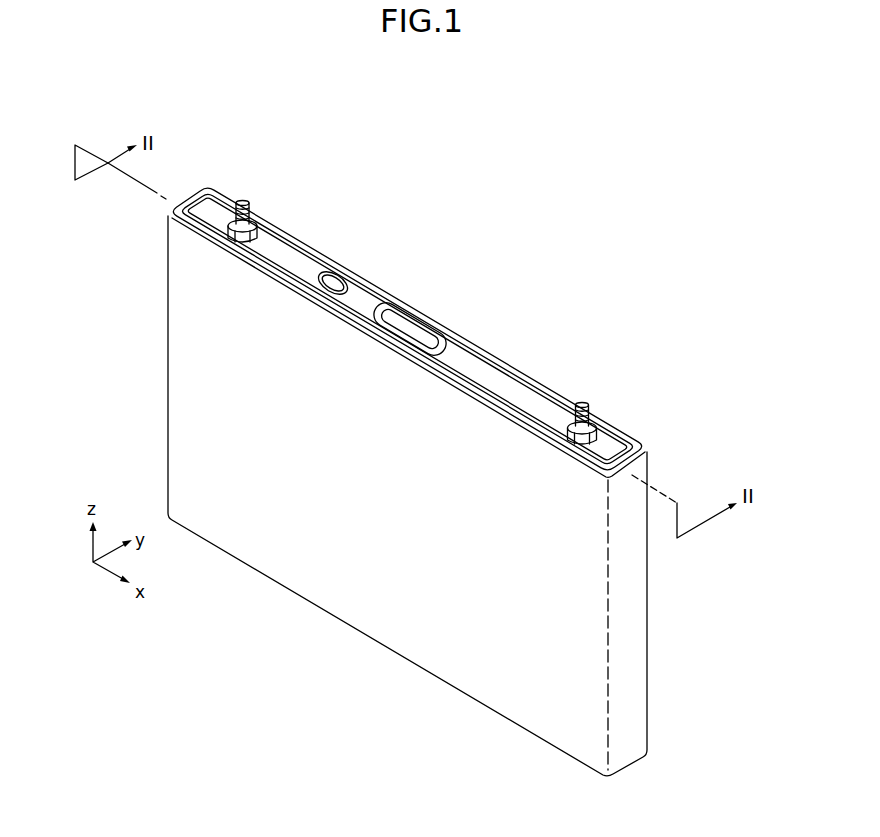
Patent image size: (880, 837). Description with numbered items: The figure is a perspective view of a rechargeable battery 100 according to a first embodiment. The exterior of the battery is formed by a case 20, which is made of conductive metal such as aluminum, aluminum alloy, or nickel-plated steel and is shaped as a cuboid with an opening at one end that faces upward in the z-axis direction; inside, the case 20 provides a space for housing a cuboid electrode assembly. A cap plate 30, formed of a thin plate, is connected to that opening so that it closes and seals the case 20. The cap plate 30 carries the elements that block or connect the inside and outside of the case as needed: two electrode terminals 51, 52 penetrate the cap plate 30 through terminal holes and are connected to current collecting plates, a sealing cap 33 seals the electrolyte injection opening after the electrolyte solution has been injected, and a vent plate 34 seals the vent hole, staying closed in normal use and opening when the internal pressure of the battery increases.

The rechargeable battery 100 is at (548, 239).
The case 20 is at (383, 632).
The cap plate 30 is at (360, 298).
The sealing cap 33 is at (333, 285).
The vent plate 34 is at (415, 327).
The electrode terminal 51 is at (250, 192).
The electrode terminal 52 is at (588, 396).